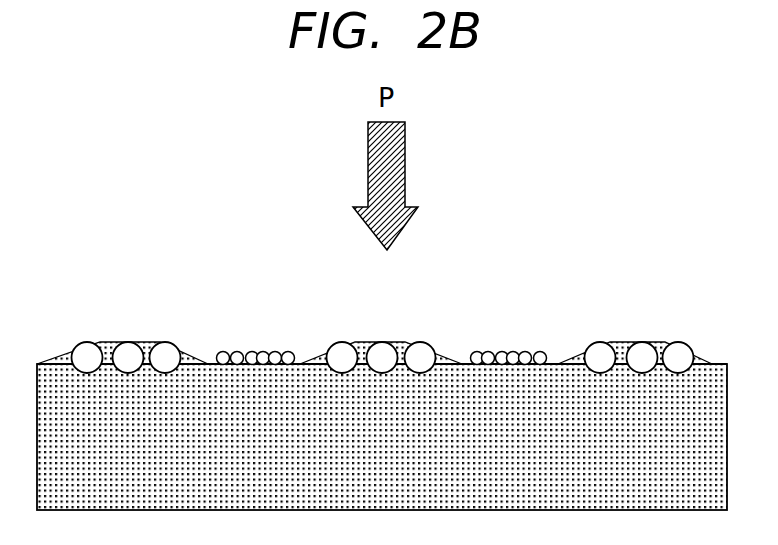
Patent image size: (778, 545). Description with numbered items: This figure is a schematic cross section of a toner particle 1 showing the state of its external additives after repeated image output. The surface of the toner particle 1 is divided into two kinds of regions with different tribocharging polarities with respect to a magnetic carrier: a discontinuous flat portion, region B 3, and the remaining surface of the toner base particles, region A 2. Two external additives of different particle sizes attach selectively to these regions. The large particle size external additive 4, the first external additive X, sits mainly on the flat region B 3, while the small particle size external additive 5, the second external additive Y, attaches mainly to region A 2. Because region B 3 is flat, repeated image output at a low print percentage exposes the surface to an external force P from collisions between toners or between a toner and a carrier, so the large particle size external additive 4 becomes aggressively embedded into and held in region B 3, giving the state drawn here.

The toner particle 1 is at (200, 315).
The region A 2 is at (296, 363).
The region B 3 is at (703, 361).
The large particle size external additive 4 is at (602, 352).
The small particle size external additive 5 is at (524, 353).